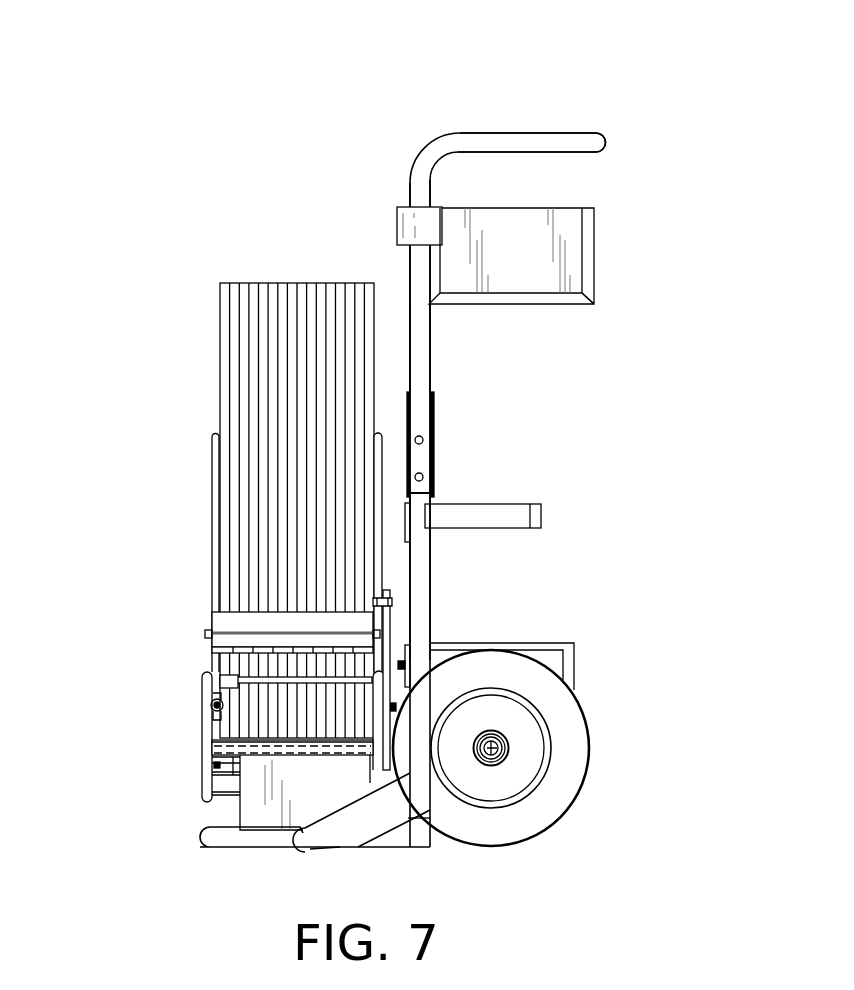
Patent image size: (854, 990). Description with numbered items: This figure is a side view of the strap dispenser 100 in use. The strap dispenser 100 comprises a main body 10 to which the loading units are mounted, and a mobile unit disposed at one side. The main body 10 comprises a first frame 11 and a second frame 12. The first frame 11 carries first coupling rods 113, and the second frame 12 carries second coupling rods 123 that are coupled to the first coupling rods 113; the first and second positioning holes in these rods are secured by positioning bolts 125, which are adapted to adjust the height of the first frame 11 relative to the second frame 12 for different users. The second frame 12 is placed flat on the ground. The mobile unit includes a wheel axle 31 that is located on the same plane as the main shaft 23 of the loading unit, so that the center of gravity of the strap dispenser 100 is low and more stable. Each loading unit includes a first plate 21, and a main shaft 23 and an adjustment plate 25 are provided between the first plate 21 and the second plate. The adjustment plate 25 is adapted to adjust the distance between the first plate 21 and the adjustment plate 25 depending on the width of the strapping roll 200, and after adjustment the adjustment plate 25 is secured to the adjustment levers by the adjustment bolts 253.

The main body 10 is at (576, 133).
The strap dispenser 100 is at (509, 133).
The first frame 11 is at (418, 262).
The first coupling rods 113 is at (420, 343).
The positioning bolts 125 is at (423, 440).
The second coupling rods 123 is at (417, 617).
The wheel axle 31 is at (492, 747).
The strapping roll 200 is at (205, 337).
The adjustment plate 25 is at (215, 468).
The first plate 21 is at (380, 548).
The adjustment bolt 253 is at (211, 704).
The main shaft 23 is at (212, 742).
The second frame 12 is at (205, 834).